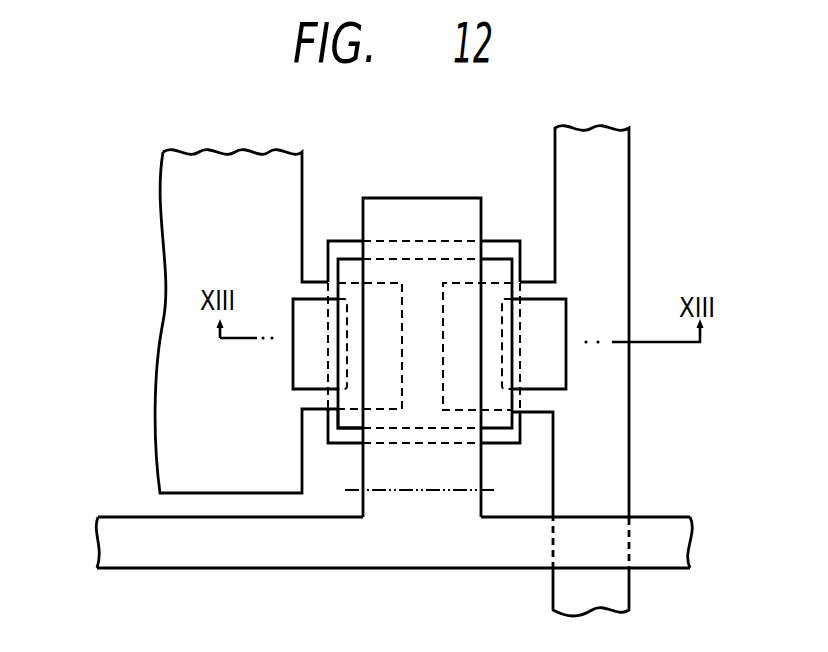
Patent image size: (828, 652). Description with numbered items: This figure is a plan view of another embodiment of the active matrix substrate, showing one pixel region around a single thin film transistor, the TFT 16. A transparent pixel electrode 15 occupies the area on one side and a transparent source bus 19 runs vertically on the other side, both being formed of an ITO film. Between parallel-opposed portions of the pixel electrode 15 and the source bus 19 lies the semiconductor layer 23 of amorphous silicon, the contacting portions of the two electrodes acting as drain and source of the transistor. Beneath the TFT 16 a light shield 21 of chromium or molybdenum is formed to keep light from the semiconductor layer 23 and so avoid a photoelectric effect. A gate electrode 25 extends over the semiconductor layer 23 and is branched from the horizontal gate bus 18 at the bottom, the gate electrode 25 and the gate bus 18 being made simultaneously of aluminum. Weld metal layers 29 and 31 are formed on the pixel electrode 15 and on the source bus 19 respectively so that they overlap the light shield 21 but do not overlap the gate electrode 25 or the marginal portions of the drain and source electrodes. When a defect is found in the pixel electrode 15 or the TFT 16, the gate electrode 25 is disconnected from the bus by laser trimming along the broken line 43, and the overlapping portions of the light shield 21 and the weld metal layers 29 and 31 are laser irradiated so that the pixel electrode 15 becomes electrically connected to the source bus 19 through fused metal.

The pixel electrode 15 is at (173, 197).
The TFT 16 is at (424, 313).
The gate bus 18 is at (162, 552).
The source bus 19 is at (618, 163).
The light shield 21 is at (508, 241).
The semiconductor layer 23 is at (350, 259).
The gate electrode 25 is at (395, 198).
The weld metal layer 29 is at (293, 362).
The weld metal layer 31 is at (566, 375).
The broken line 43 is at (450, 490).